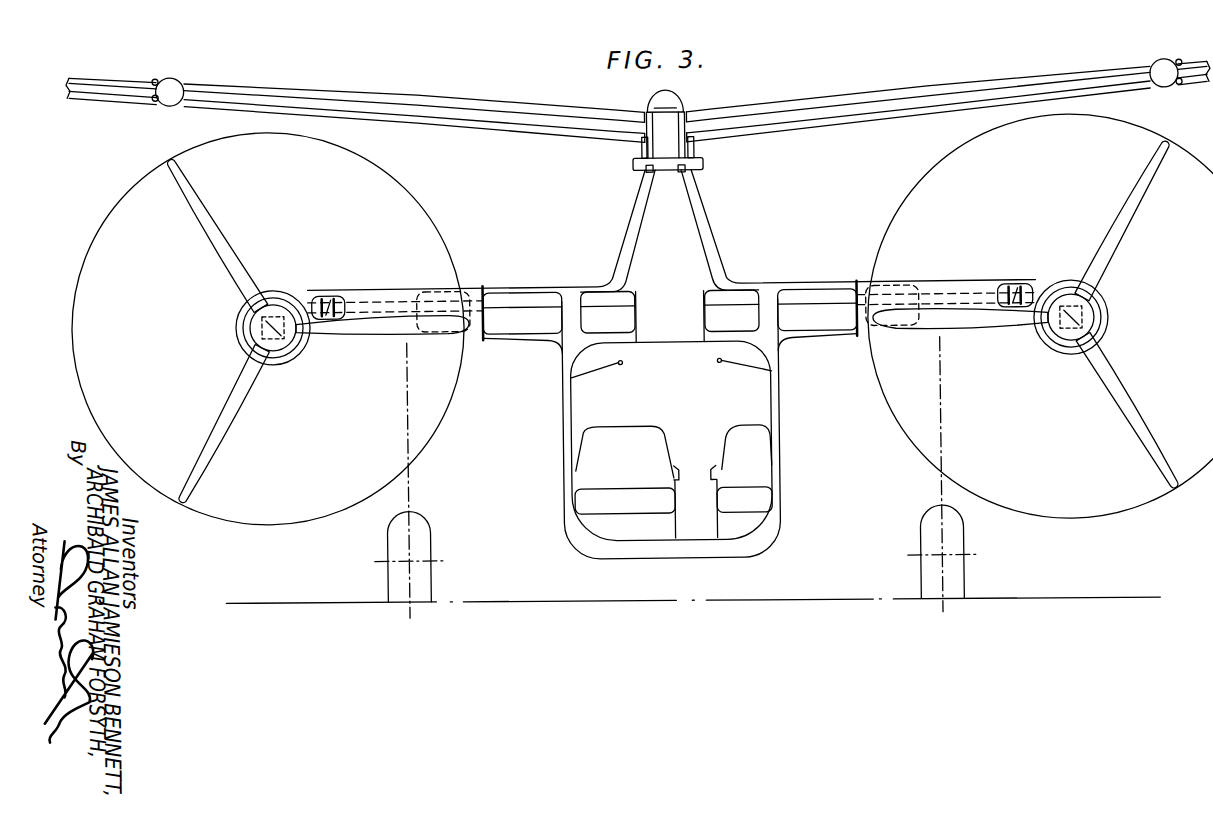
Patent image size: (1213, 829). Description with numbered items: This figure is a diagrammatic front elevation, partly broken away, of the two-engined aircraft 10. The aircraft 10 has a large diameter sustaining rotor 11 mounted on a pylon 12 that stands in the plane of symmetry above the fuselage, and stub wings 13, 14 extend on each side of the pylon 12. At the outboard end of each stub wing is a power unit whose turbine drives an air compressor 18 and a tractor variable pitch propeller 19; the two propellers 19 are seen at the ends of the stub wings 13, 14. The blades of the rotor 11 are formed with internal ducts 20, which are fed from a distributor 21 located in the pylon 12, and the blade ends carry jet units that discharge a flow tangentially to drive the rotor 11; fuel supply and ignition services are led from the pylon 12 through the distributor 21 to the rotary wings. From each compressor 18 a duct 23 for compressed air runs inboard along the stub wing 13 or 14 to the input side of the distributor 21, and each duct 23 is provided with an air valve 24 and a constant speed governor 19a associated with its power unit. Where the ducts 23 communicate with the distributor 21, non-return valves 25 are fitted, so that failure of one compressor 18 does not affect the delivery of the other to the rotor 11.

The aircraft 10 is at (562, 500).
The sustaining rotor 11 is at (440, 96).
The pylon 12 is at (701, 206).
The stub wing 13 is at (410, 289).
The stub wing 14 is at (853, 290).
The air compressor 18 is at (272, 310).
The tractor variable pitch propeller 19 is at (221, 249).
The constant speed governor 19a is at (262, 325).
The internal duct 20 is at (381, 100).
The distributor 21 is at (688, 120).
The duct 23 is at (526, 301).
The air valve 24 is at (323, 294).
The non-return valve 25 is at (646, 173).